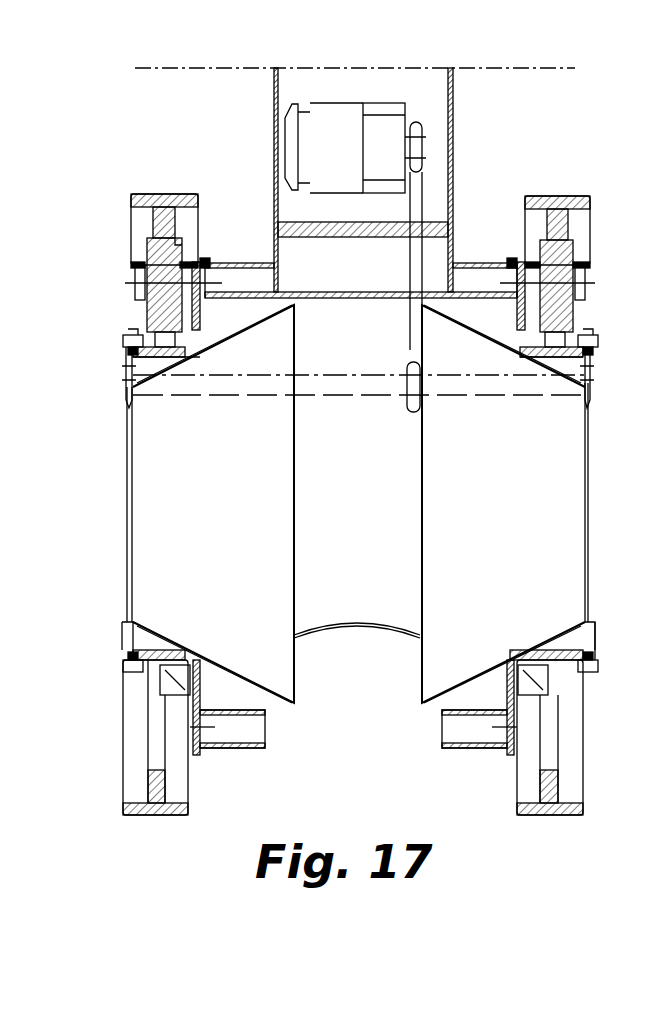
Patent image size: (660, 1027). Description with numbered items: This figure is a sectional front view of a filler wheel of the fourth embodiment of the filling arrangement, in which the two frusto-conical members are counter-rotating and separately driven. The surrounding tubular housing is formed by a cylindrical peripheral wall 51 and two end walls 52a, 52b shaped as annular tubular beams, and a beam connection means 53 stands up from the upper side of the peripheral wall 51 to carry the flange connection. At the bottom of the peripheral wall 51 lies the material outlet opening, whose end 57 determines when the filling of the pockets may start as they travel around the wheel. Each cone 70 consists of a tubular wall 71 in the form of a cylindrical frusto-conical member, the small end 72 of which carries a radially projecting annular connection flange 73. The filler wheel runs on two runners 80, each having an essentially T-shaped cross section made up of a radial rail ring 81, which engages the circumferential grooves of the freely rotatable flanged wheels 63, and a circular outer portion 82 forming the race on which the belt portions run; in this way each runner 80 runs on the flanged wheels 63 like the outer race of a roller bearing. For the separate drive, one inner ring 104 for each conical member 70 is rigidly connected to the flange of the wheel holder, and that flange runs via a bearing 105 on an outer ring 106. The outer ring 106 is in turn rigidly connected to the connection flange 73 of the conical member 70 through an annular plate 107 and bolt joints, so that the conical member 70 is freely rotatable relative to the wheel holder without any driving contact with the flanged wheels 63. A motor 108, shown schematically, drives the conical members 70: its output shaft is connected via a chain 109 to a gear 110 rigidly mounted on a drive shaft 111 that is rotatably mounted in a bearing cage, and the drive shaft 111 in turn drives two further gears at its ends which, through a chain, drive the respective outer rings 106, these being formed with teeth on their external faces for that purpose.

The motor 108 is at (345, 103).
The beam connection means 53 is at (454, 118).
The chain 109 is at (422, 200).
The outer portion 82 is at (168, 197).
The flanged wheels 63 is at (160, 250).
The outer ring 106 is at (592, 340).
The bearing 105 is at (592, 355).
The annular plate 107 is at (590, 383).
The inner ring 104 is at (187, 360).
The drive shaft 111 is at (333, 385).
The gear 110 is at (410, 395).
The cone 70 is at (218, 533).
The small end 72 is at (588, 495).
The peripheral wall 51 is at (381, 632).
The end 57 is at (352, 626).
The tubular wall 71 is at (238, 672).
The connection flange 73 is at (588, 621).
The end wall 52a is at (238, 748).
The end wall 52b is at (465, 748).
The rail ring 81 is at (148, 778).
The runners 80 is at (160, 818).